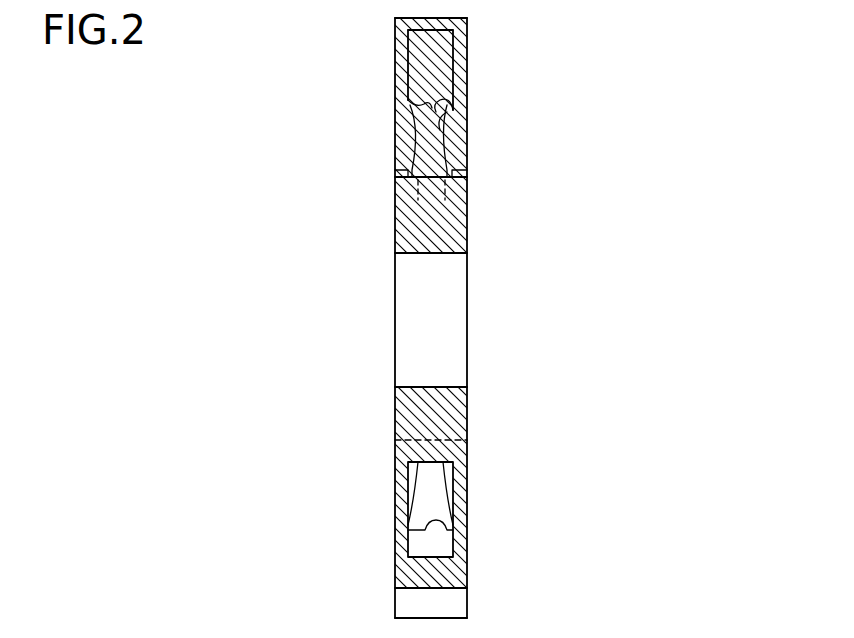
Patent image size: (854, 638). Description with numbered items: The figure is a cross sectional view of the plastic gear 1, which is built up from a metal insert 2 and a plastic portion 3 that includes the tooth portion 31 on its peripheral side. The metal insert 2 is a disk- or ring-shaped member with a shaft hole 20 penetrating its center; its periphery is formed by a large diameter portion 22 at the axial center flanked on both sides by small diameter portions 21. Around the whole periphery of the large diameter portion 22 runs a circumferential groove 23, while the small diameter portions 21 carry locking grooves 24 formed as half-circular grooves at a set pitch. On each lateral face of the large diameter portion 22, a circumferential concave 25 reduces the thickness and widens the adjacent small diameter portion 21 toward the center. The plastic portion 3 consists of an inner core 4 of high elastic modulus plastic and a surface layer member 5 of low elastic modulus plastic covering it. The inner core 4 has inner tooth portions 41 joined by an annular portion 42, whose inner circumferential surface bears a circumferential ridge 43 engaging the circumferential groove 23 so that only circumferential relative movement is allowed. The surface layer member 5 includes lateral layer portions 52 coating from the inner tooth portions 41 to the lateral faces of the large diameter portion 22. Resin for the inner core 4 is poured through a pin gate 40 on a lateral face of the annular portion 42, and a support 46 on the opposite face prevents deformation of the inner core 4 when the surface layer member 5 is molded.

The plastic gear 1 is at (668, 62).
The metal insert 2 is at (469, 225).
The plastic portion 3 is at (562, 14).
The inner core 4 is at (469, 52).
The surface layer member 5 is at (469, 28).
The shaft hole 20 is at (397, 268).
The small diameter portion 21 is at (400, 164).
The large diameter portion 22 is at (410, 97).
The circumferential groove 23 is at (469, 100).
The locking groove 24 is at (400, 196).
The circumferential concave 25 is at (469, 160).
The tooth portion 31 is at (468, 602).
The pin gate 40 is at (408, 543).
The inner tooth portion 41 is at (400, 42).
The annular portion 42 is at (405, 575).
The circumferential ridge 43 is at (469, 130).
The support 46 is at (470, 542).
The lateral layer portion 52 is at (404, 140).